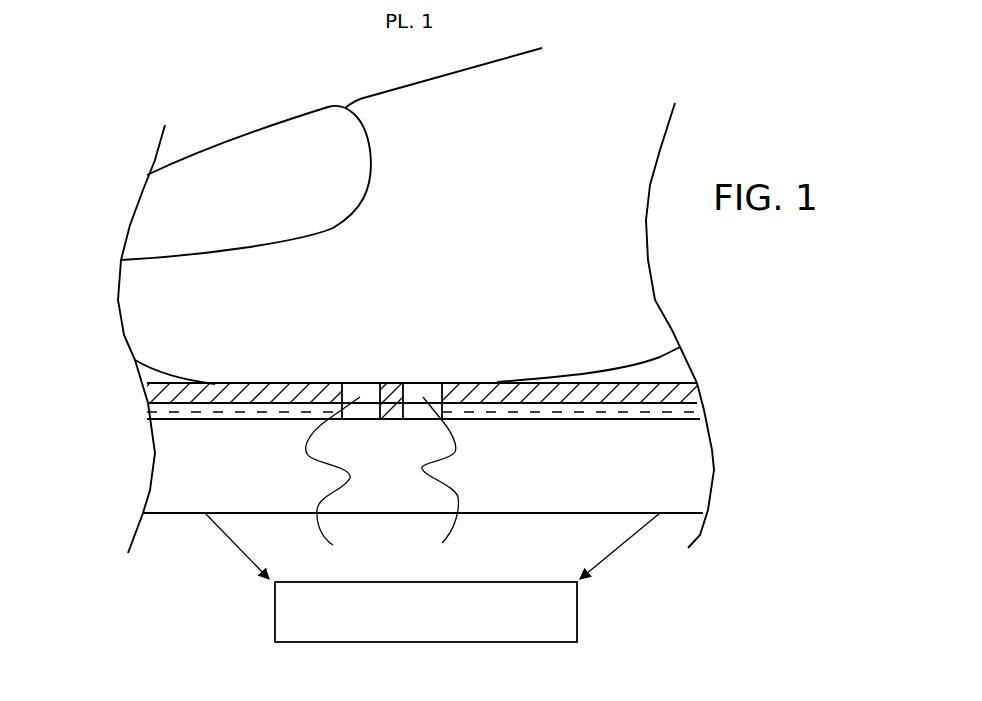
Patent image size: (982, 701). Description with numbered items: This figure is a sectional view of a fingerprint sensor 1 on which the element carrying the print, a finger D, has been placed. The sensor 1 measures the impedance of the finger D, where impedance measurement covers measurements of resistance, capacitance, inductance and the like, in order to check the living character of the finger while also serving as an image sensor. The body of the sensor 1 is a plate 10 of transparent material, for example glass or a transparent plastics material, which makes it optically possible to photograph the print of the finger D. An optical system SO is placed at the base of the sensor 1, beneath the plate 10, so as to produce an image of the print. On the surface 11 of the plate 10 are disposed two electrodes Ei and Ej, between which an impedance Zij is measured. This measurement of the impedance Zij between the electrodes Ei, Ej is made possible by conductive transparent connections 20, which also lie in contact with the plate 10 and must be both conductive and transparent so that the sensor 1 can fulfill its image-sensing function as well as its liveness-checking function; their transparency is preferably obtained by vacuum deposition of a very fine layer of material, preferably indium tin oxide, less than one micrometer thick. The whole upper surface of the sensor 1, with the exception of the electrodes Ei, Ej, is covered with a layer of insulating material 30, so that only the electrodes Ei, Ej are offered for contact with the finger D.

The fingerprint sensor 1 is at (140, 416).
The plate 10 is at (670, 477).
The surface 11 is at (680, 425).
The conductive transparent connections 20 is at (685, 412).
The layer of insulating material 30 is at (687, 392).
The finger D is at (489, 214).
The electrode Ei is at (365, 383).
The electrode Ej is at (422, 383).
The impedance Zij is at (442, 543).
The optical system SO is at (423, 624).